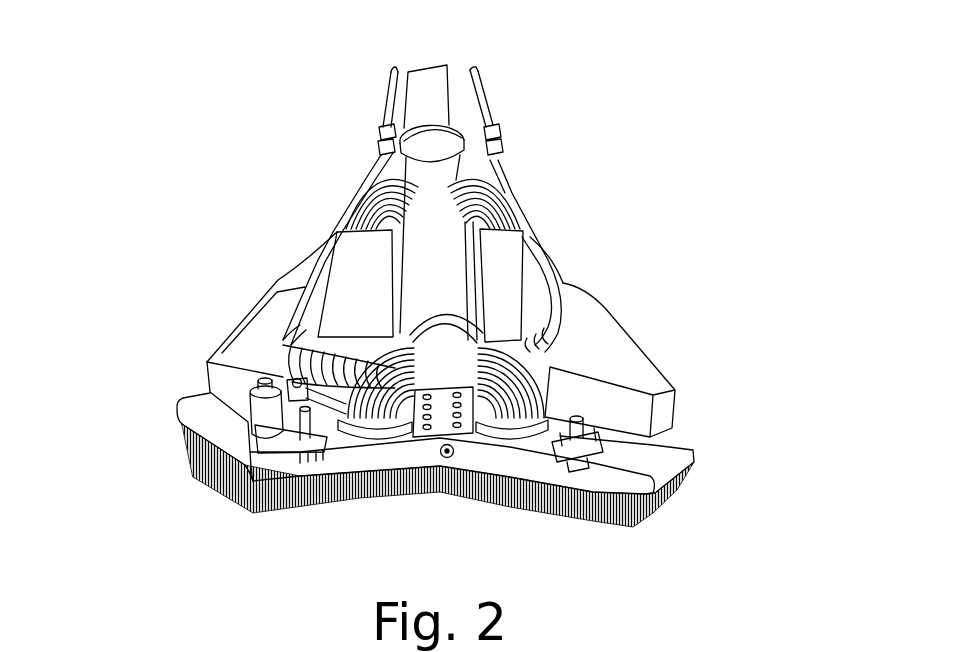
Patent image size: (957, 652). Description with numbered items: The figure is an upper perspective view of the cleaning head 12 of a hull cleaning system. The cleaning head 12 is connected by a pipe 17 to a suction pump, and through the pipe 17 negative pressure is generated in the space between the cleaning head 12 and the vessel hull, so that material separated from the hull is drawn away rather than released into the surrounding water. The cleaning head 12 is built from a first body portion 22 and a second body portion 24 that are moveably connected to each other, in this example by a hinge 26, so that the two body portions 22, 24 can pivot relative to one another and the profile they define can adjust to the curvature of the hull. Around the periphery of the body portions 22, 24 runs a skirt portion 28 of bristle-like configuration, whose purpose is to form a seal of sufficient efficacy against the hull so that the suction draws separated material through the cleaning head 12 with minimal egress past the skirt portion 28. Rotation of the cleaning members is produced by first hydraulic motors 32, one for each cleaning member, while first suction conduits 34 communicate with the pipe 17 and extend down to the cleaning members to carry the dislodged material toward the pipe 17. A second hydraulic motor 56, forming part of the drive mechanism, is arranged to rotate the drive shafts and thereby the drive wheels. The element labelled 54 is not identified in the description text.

The cleaning head 12 is at (704, 112).
The pipe 17 is at (437, 92).
The first body portion 22 is at (673, 438).
The second body portion 24 is at (200, 398).
The hinge 26 is at (449, 458).
The skirt portion 28 is at (612, 510).
The first hydraulic motor 32 is at (350, 360).
The first suction conduit 34 is at (370, 200).
The hose fitting 54 is at (295, 379).
The second hydraulic motor 56 is at (270, 415).